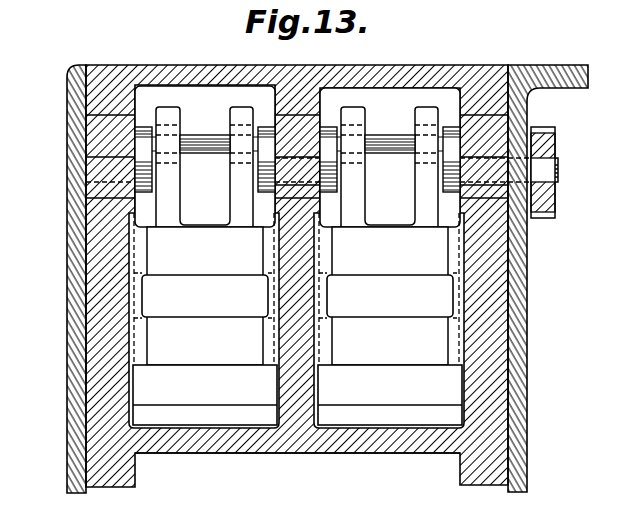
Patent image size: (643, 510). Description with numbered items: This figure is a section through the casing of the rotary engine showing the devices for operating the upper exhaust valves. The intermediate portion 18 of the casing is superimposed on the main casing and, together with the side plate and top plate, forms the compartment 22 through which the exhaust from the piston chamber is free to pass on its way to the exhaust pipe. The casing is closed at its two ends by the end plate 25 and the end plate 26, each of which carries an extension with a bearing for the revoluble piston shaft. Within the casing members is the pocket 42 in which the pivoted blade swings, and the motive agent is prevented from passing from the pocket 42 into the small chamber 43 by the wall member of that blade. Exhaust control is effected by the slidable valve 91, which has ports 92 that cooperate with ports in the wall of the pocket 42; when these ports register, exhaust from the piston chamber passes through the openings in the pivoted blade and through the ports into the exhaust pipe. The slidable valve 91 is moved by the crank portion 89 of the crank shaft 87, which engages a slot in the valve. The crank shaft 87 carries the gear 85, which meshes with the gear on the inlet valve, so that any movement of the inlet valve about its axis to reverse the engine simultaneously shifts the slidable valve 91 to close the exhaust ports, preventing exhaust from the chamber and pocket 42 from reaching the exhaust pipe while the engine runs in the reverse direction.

The intermediate portion of casing 18 is at (383, 69).
The compartment 22 is at (184, 92).
The end plate 25 is at (67, 247).
The end plate 26 is at (525, 278).
The pocket 42 is at (297, 395).
The small chamber 43 is at (297, 469).
The gear 85 is at (555, 149).
The crank shaft 87 is at (86, 181).
The crank portion 89 is at (184, 140).
The slidable valve 91 is at (296, 289).
The ports 92 is at (297, 296).